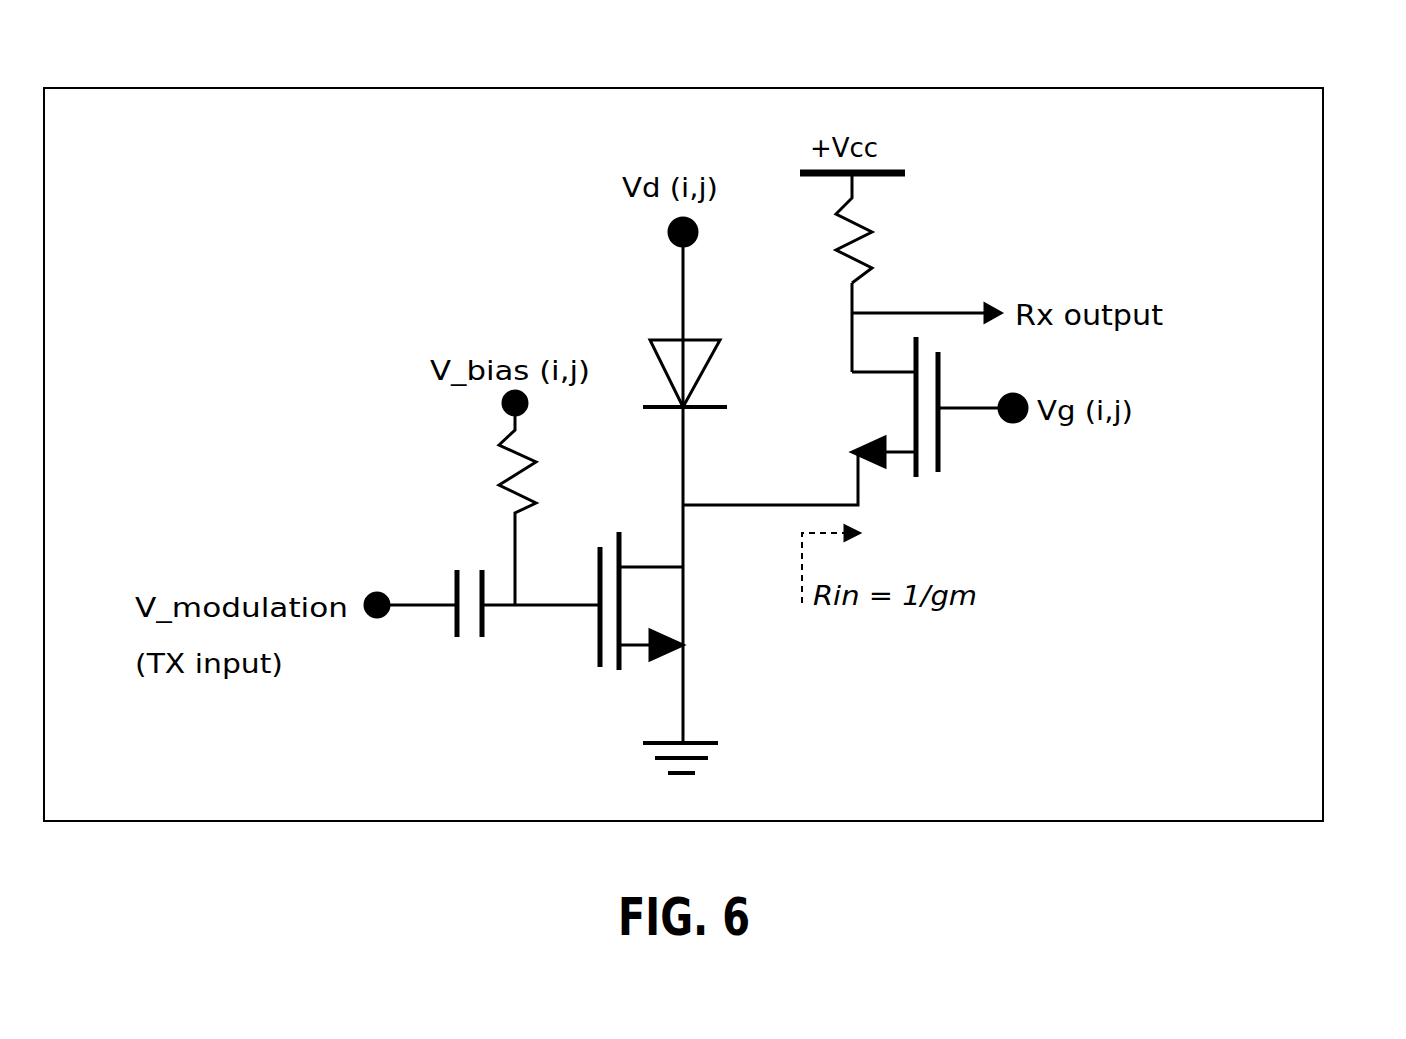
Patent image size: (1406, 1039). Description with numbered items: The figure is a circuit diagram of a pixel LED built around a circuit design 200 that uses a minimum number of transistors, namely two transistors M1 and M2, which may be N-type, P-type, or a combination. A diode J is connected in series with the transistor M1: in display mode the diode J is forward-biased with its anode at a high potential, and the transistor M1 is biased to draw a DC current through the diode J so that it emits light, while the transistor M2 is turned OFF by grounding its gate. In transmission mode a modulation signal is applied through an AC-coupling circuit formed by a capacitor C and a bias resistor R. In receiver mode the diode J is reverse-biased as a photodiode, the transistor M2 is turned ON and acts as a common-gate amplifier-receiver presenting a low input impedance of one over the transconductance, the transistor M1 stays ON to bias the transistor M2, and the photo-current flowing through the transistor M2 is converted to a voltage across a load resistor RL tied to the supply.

The circuit design 200 is at (1280, 88).
The transistor M1 is at (656, 601).
The transistor M2 is at (870, 407).
The resistor of AC-coupling circuit R is at (496, 504).
The capacitor of AC-coupling circuit C is at (469, 631).
The diode J is at (689, 373).
The load resistor RL is at (873, 228).